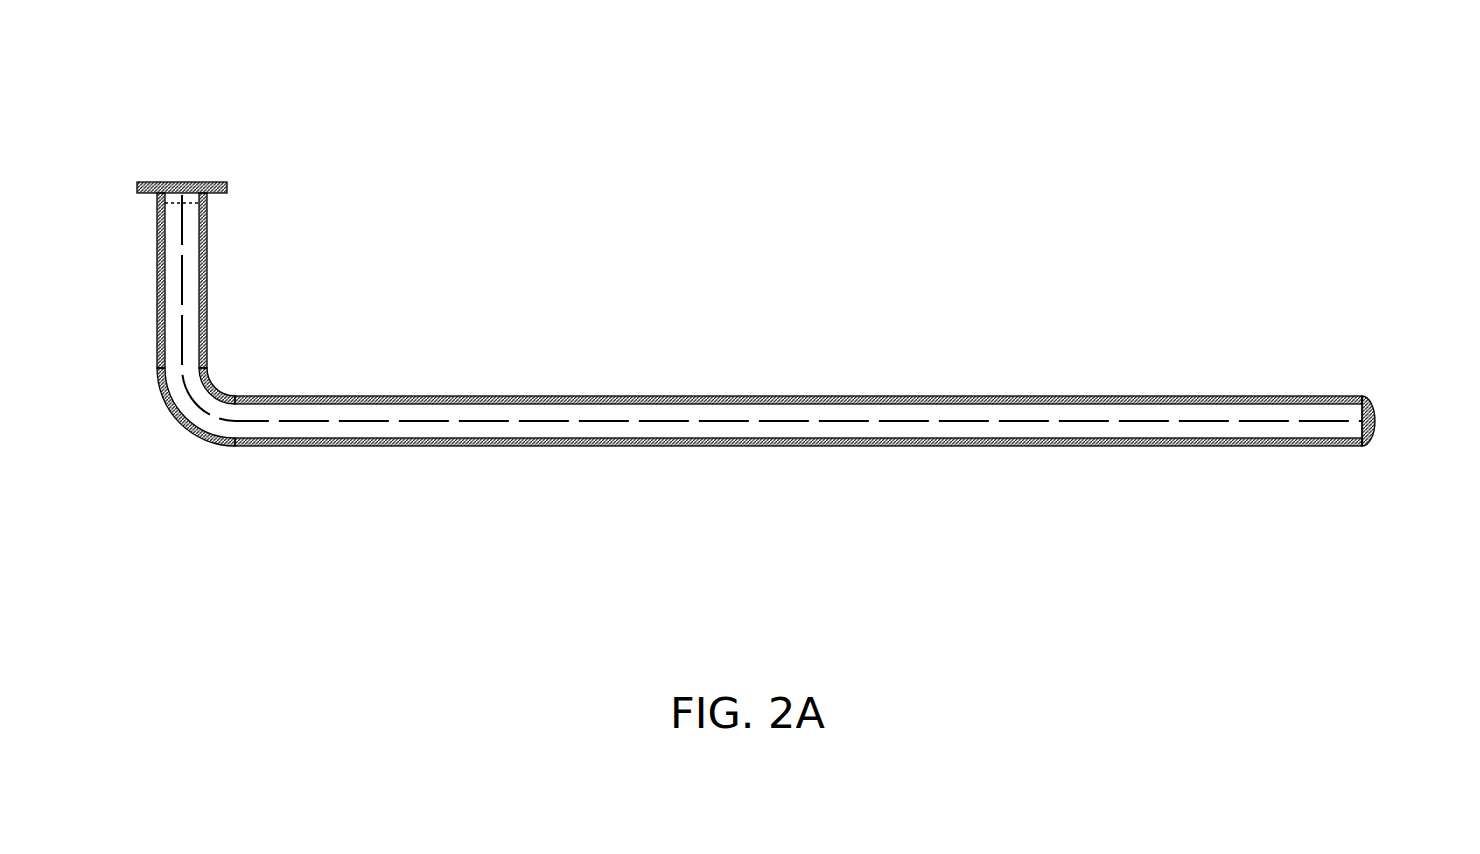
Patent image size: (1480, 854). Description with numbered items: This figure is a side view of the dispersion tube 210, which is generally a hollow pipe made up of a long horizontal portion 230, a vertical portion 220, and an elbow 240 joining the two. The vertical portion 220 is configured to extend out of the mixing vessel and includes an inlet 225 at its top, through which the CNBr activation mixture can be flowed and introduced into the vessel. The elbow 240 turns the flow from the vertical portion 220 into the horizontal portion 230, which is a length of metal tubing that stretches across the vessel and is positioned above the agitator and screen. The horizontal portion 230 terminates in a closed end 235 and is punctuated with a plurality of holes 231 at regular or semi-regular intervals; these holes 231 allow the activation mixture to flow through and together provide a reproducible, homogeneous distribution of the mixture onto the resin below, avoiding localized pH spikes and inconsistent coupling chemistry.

The dispersion tube 210 is at (1118, 190).
The vertical portion 220 is at (203, 280).
The inlet 225 is at (186, 182).
The horizontal portion 230 is at (1157, 420).
The holes 231 is at (872, 443).
The closed end 235 is at (1375, 421).
The elbow 240 is at (196, 424).